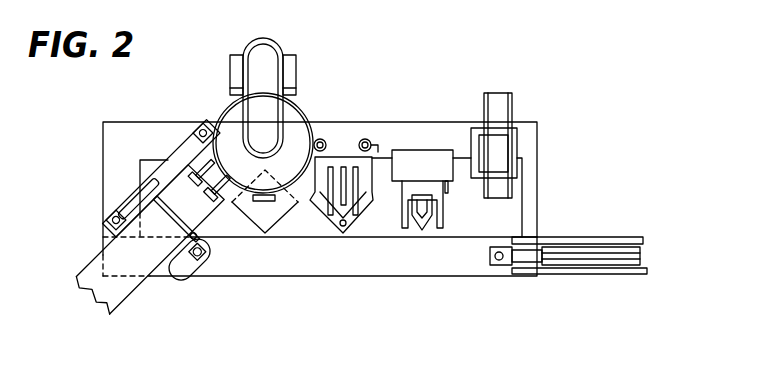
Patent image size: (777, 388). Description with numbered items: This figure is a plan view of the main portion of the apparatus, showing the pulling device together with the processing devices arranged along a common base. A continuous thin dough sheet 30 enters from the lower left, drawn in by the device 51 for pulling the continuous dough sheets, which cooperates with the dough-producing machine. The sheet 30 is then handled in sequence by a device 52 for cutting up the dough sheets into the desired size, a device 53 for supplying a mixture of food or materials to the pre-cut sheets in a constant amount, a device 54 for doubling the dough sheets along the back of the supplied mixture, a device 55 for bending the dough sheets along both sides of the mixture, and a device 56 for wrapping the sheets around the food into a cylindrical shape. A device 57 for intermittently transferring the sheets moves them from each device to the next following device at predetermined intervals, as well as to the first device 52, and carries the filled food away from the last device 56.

The dough sheet 30 is at (122, 285).
The device for pulling the continuous dough sheets 51 is at (498, 61).
The device for cutting up the dough sheets 52 is at (162, 167).
The device for supplying a mixture of food or materials 53 is at (230, 120).
The device for doubling the dough sheets 54 is at (337, 165).
The device for bending the dough sheets 55 is at (412, 158).
The device for wrapping the sheets around the food 56 is at (485, 118).
The device for intermittently transferring the sheets 57 is at (323, 238).